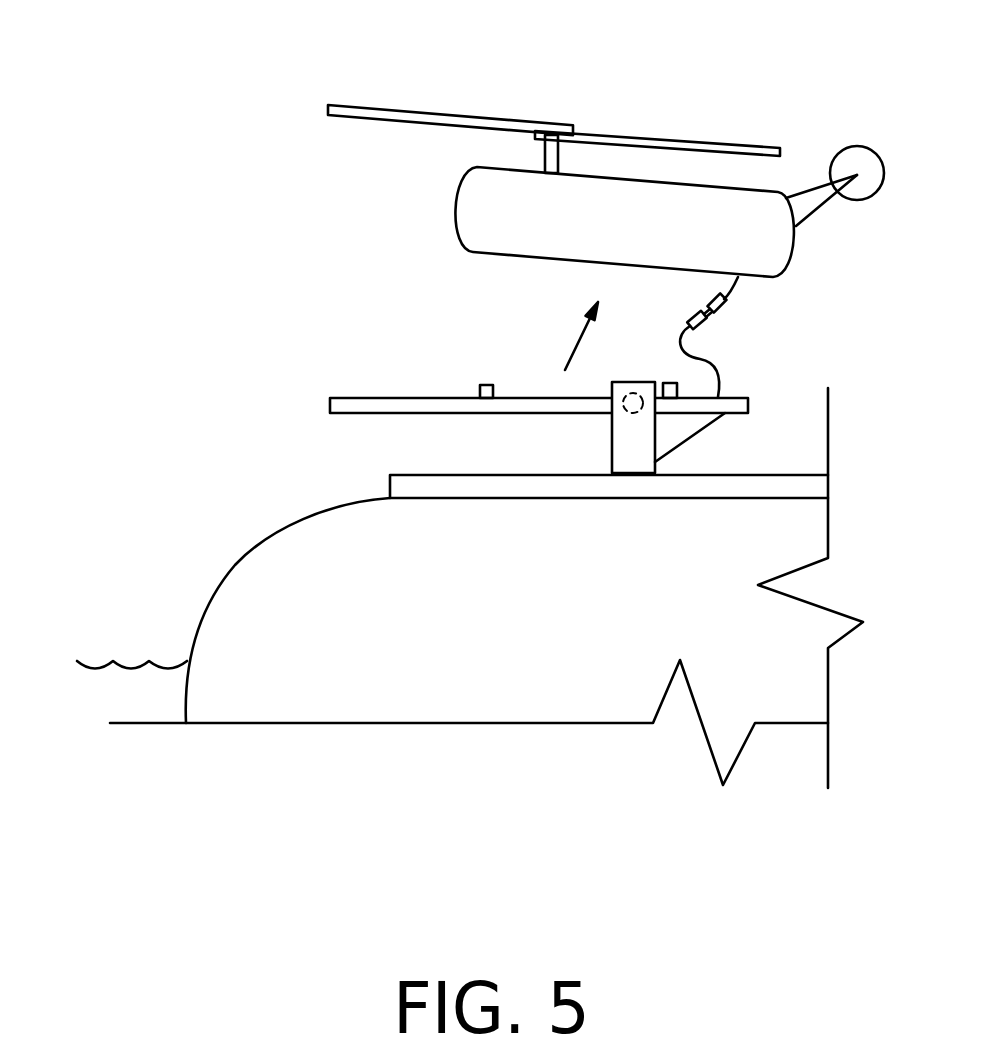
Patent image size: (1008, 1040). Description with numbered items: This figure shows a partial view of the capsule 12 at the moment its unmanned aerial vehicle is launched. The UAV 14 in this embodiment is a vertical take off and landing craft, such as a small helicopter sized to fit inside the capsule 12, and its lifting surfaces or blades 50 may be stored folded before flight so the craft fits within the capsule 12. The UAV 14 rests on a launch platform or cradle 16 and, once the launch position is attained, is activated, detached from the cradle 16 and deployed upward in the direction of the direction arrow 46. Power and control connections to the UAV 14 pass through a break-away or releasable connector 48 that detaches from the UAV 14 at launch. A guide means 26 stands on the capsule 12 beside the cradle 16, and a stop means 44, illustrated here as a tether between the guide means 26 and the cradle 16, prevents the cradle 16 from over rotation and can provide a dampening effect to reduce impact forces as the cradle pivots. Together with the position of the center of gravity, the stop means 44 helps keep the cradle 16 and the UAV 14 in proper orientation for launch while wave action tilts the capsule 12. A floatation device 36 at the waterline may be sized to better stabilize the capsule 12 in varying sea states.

The capsule 12 is at (388, 488).
The UAV 14 is at (453, 198).
The cradle 16 is at (387, 398).
The guide means 26 is at (612, 434).
The floatation device 36 is at (210, 595).
The stop means 44 is at (698, 437).
The direction arrow 46 is at (575, 347).
The releasable connector 48 is at (719, 309).
The blades 50 is at (640, 132).